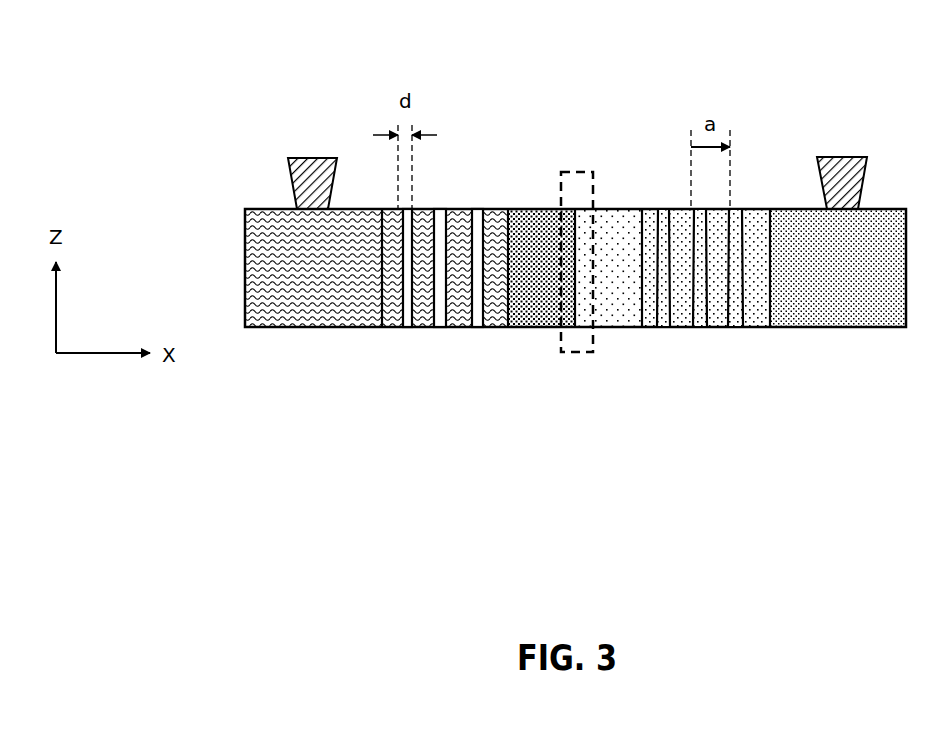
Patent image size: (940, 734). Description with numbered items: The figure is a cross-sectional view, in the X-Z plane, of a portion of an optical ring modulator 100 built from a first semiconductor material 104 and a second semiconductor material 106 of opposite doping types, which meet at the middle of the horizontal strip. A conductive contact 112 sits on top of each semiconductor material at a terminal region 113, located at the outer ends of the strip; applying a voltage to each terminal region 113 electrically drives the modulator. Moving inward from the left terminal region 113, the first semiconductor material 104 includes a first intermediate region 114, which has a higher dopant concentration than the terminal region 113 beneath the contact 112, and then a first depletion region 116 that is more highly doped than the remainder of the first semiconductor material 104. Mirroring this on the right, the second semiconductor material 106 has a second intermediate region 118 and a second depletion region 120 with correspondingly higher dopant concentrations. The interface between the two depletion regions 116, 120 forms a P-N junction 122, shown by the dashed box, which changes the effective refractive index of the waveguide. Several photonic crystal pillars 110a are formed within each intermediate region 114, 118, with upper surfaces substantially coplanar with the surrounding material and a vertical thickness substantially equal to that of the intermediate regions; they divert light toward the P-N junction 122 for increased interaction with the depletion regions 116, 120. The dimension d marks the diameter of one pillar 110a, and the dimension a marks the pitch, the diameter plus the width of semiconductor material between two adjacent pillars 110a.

The optical ring modulator 100 is at (289, 85).
The first semiconductor material 104 is at (246, 455).
The second semiconductor material 106 is at (581, 455).
The photonic crystal pillars 110a is at (409, 208).
The conductive contacts 112 is at (327, 157).
The terminal region 113 is at (263, 326).
The first intermediate region 114 is at (423, 327).
The first depletion region 116 is at (543, 327).
The second intermediate region 118 is at (710, 327).
The second depletion region 120 is at (617, 327).
The P-N junction 122 is at (572, 170).